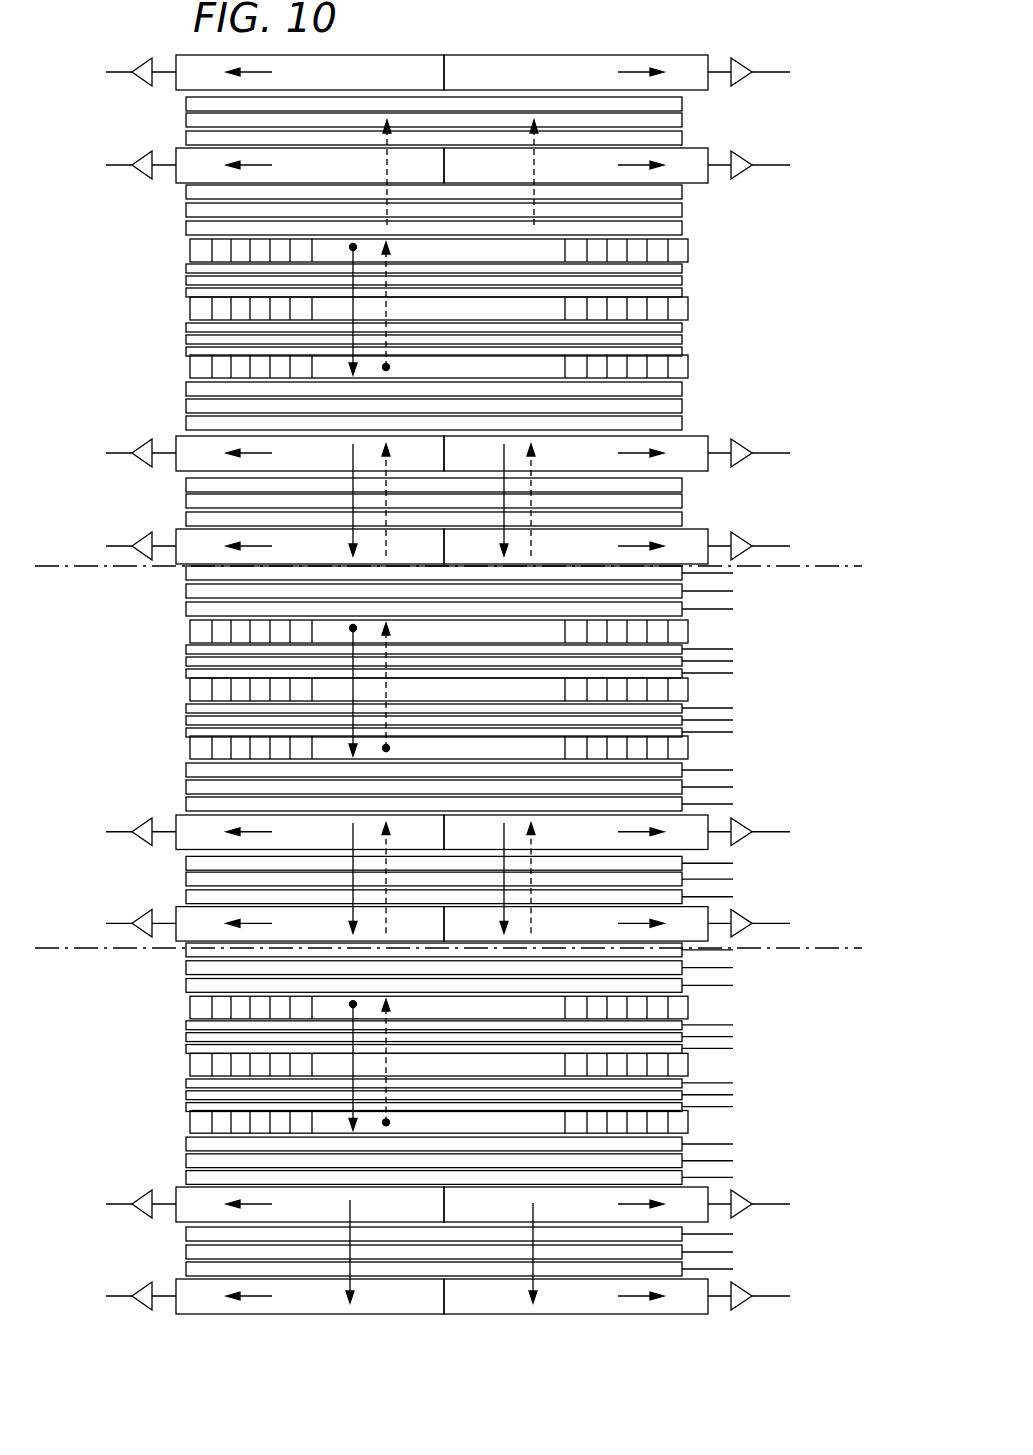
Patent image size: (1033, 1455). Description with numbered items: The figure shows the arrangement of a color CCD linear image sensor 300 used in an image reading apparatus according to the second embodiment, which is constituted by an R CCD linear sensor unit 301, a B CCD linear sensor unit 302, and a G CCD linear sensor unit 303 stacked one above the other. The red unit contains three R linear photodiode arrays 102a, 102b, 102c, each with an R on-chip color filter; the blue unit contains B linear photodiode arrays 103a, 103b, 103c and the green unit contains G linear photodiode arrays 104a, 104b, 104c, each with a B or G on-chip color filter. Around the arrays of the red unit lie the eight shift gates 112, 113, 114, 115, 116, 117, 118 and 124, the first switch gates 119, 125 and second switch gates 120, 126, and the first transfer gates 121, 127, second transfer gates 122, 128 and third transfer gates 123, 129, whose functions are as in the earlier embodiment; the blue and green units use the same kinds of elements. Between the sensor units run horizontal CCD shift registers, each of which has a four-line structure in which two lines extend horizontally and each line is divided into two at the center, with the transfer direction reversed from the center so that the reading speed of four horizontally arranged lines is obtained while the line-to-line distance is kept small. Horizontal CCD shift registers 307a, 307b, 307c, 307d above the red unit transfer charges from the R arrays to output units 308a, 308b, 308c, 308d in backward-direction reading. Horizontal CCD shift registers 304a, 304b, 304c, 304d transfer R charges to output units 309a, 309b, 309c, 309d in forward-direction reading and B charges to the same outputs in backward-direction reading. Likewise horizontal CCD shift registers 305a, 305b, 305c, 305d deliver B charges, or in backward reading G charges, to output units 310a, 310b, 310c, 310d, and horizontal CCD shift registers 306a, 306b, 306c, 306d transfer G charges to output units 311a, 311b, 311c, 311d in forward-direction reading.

The color CCD linear image sensor 300 is at (622, 44).
The R CCD linear sensor unit 301 is at (146, 226).
The B CCD linear sensor unit 302 is at (415, 719).
The G CCD linear sensor unit 303 is at (415, 1094).
The R linear photodiode array 102a is at (439, 251).
The R linear photodiode array 102b is at (439, 309).
The R linear photodiode array 102c is at (439, 367).
The B linear photodiode array 103a is at (439, 632).
The B linear photodiode array 103b is at (439, 690).
The B linear photodiode array 103c is at (439, 748).
The G linear photodiode array 104a is at (439, 1008).
The G linear photodiode array 104b is at (439, 1065).
The G linear photodiode array 104c is at (439, 1123).
The shift gate SH1 112 is at (502, 261).
The shift gate SH2 113 is at (502, 279).
The shift gate SH3 114 is at (502, 298).
The shift gate SH4 115 is at (502, 320).
The shift gate SH5 116 is at (502, 339).
The shift gate SH6 117 is at (502, 358).
The shift gate SH7 118 is at (502, 386).
The switch gate SG1 119 is at (502, 406).
The switch gate SG2 120 is at (502, 426).
The transfer gate TG1 121 is at (502, 484).
The transfer gate TG2 122 is at (502, 503).
The transfer gate TG3 123 is at (502, 524).
The shift gate SH8 124 is at (502, 233).
The switch gate SG1 125 is at (502, 213).
The switch gate SG2 126 is at (502, 195).
The transfer gate TG1 127 is at (502, 103).
The transfer gate TG2 128 is at (502, 122).
The transfer gate TG3 129 is at (502, 143).
The horizontal CCD shift register 304a is at (310, 453).
The horizontal CCD shift register 304b is at (576, 453).
The horizontal CCD shift register 304c is at (310, 546).
The horizontal CCD shift register 304d is at (576, 546).
The horizontal CCD shift register 305a is at (310, 832).
The horizontal CCD shift register 305b is at (576, 832).
The horizontal CCD shift register 305c is at (310, 924).
The horizontal CCD shift register 305d is at (576, 924).
The horizontal CCD shift register 306a is at (310, 1204).
The horizontal CCD shift register 306b is at (576, 1204).
The horizontal CCD shift register 306c is at (310, 1296).
The horizontal CCD shift register 306d is at (576, 1296).
The horizontal CCD shift register 307a is at (310, 72).
The horizontal CCD shift register 307b is at (576, 72).
The horizontal CCD shift register 307c is at (310, 165).
The horizontal CCD shift register 307d is at (576, 165).
The output unit 308a is at (114, 61).
The output unit 308b is at (778, 62).
The output unit 308c is at (114, 153).
The output unit 308d is at (794, 181).
The output unit 309a is at (101, 441).
The output unit 309b is at (792, 469).
The output unit 309c is at (101, 534).
The output unit 309d is at (792, 535).
The output unit 310a is at (101, 819).
The output unit 310b is at (792, 818).
The output unit 310c is at (101, 911).
The output unit 310d is at (792, 911).
The output unit 311a is at (114, 1193).
The output unit 311b is at (778, 1191).
The output unit 311c is at (114, 1285).
The output unit 311d is at (778, 1284).